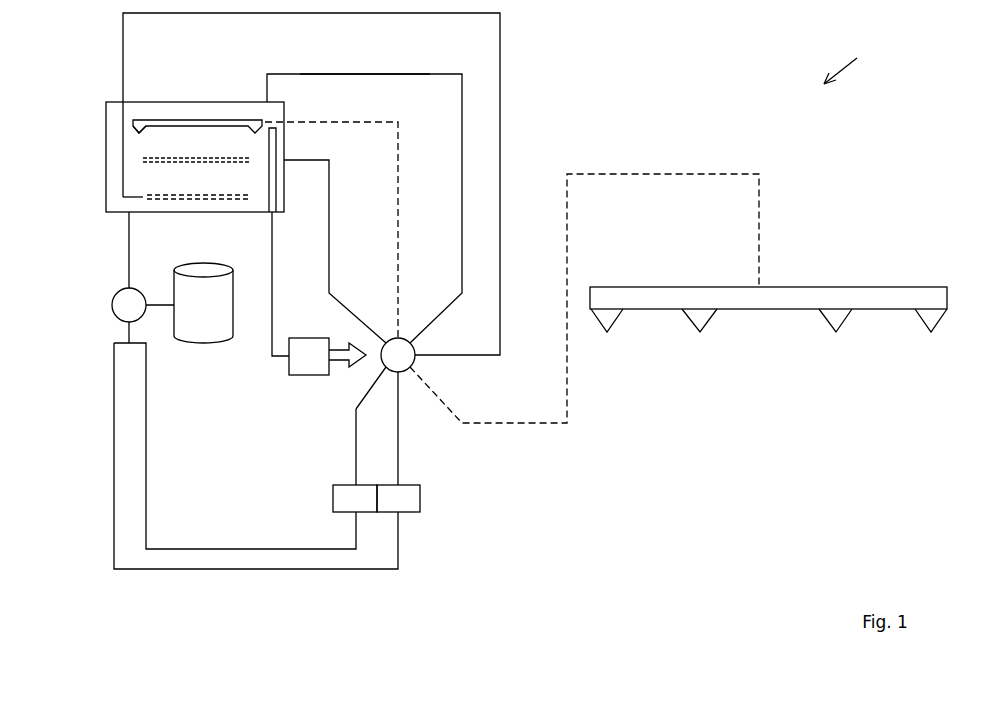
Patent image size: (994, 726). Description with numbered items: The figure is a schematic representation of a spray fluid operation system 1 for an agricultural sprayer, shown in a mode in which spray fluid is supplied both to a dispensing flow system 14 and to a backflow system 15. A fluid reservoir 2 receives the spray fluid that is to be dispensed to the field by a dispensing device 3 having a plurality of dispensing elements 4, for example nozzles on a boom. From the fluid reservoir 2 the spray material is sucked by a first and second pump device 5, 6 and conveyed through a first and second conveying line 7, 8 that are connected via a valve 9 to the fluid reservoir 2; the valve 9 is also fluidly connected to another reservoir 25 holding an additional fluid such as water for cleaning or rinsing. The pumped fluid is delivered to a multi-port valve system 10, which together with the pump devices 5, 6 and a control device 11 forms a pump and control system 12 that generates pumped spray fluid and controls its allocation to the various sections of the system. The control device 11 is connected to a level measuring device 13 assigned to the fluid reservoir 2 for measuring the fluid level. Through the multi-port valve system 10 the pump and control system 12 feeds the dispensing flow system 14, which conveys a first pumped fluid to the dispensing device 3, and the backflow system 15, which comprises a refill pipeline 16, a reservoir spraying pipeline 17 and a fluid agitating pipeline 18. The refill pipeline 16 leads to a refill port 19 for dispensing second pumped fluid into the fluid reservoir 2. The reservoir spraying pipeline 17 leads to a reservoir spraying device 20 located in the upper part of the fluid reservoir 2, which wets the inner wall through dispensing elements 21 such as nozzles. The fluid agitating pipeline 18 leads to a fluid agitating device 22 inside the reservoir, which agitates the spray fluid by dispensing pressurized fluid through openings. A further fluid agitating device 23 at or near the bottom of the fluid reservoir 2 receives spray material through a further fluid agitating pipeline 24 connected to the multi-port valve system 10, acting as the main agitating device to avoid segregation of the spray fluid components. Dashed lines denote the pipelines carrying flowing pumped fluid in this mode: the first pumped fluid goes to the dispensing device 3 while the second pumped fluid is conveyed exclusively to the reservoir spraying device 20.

The spray fluid operation system 1 is at (849, 60).
The fluid reservoir 2 is at (112, 113).
The dispensing device 3 is at (878, 296).
The dispensing elements 4 is at (838, 322).
The first pump device 5 is at (337, 510).
The second pump device 6 is at (408, 492).
The first conveying line 7 is at (320, 553).
The second conveying line 8 is at (245, 572).
The valve 9 is at (128, 308).
The multi-port valve system 10 is at (408, 362).
The control device 11 is at (300, 345).
The pump and control system 12 is at (335, 394).
The level measuring device 13 is at (270, 183).
The dispensing flow system 14 is at (667, 174).
The backflow system 15 is at (360, 97).
The refill pipeline 16 is at (462, 104).
The reservoir spraying pipeline 17 is at (398, 160).
The fluid agitating pipeline 18 is at (329, 233).
The refill device or port 19 is at (268, 100).
The reservoir spraying device 20 is at (178, 120).
The dispensing elements 21 is at (137, 133).
The fluid agitating device 22 is at (140, 162).
The further fluid agitating device 23 is at (145, 200).
The further fluid agitating pipeline 24 is at (500, 40).
The reservoir 25 is at (193, 335).